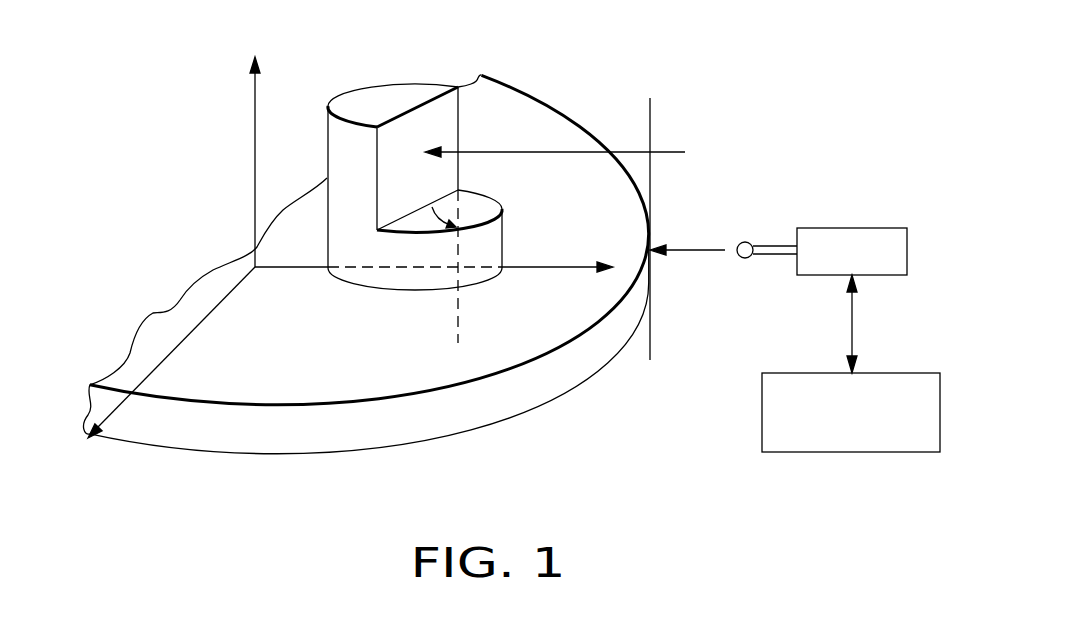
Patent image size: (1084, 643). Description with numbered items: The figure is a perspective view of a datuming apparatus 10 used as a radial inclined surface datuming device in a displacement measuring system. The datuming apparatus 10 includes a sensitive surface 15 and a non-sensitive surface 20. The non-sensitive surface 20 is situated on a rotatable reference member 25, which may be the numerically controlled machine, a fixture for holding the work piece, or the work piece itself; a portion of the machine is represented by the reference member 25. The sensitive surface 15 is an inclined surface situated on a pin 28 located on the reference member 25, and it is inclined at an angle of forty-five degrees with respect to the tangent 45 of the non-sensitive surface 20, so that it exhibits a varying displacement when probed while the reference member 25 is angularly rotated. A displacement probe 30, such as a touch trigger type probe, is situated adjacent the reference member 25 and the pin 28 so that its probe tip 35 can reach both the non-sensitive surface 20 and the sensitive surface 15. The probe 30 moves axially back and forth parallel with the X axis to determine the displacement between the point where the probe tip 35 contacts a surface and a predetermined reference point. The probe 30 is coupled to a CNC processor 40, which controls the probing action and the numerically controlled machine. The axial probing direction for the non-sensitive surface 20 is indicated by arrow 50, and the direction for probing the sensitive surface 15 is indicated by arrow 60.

The datuming apparatus 10 is at (237, 44).
The sensitive surface 15 is at (433, 108).
The non-sensitive surface 20 is at (652, 267).
The rotatable reference member 25 is at (540, 378).
The pin 28 is at (338, 187).
The displacement probe 30 is at (897, 228).
The probe tip 35 is at (748, 258).
The CNC processor 40 is at (930, 373).
The tangent 45 is at (650, 113).
The arrow 50 is at (690, 250).
The arrow 60 is at (562, 155).